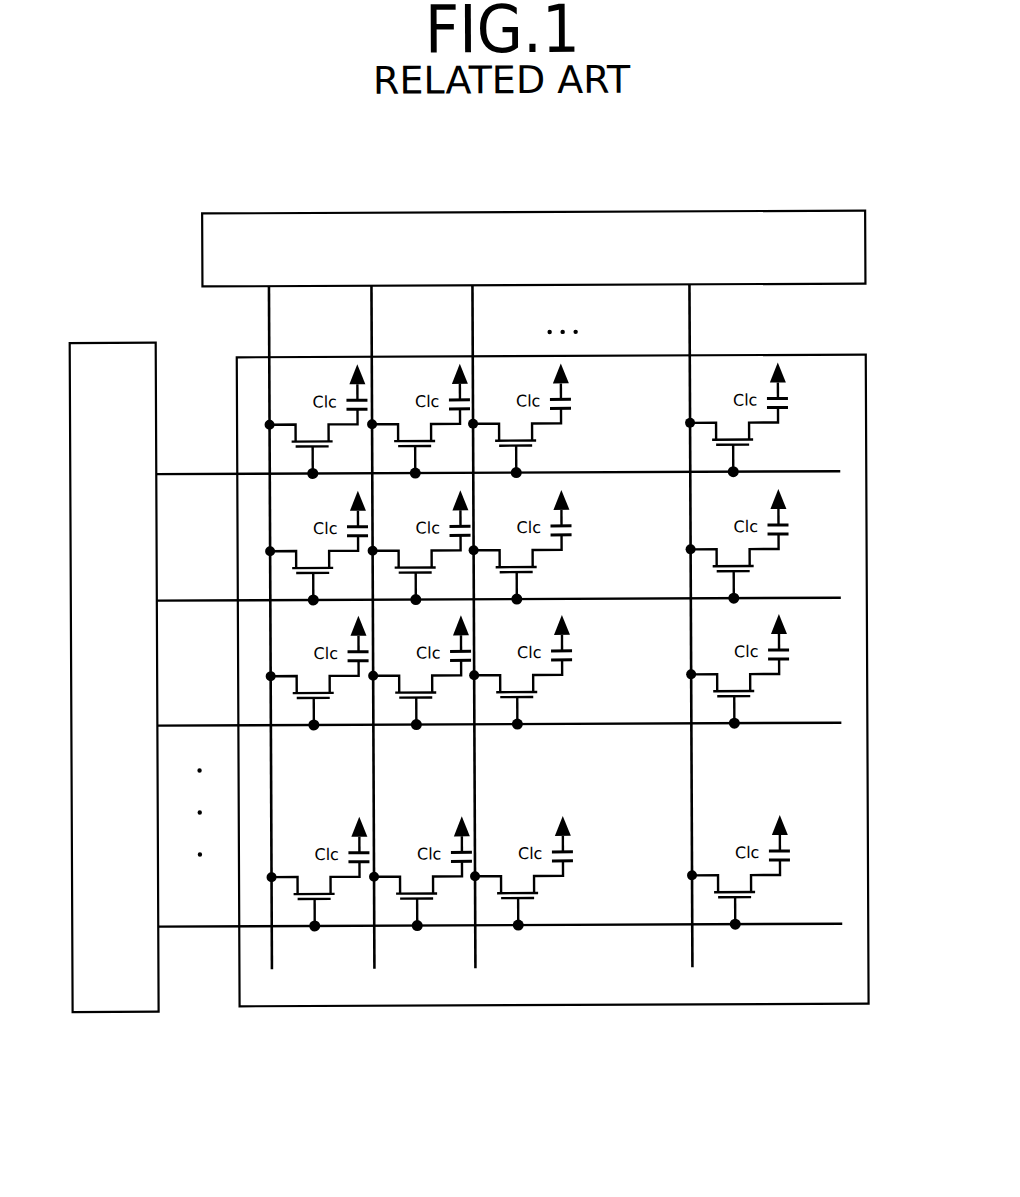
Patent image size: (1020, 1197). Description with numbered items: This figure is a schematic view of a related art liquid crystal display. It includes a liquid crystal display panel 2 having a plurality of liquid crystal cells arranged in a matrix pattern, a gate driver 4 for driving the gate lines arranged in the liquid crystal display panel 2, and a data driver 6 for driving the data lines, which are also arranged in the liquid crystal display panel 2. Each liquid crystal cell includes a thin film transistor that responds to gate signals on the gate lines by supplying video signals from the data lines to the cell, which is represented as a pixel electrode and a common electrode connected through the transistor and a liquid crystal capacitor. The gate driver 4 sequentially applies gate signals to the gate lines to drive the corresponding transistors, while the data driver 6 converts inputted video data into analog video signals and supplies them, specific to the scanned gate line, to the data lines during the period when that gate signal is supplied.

The liquid crystal display panel 2 is at (868, 380).
The gate driver 4 is at (112, 1010).
The data driver 6 is at (733, 211).